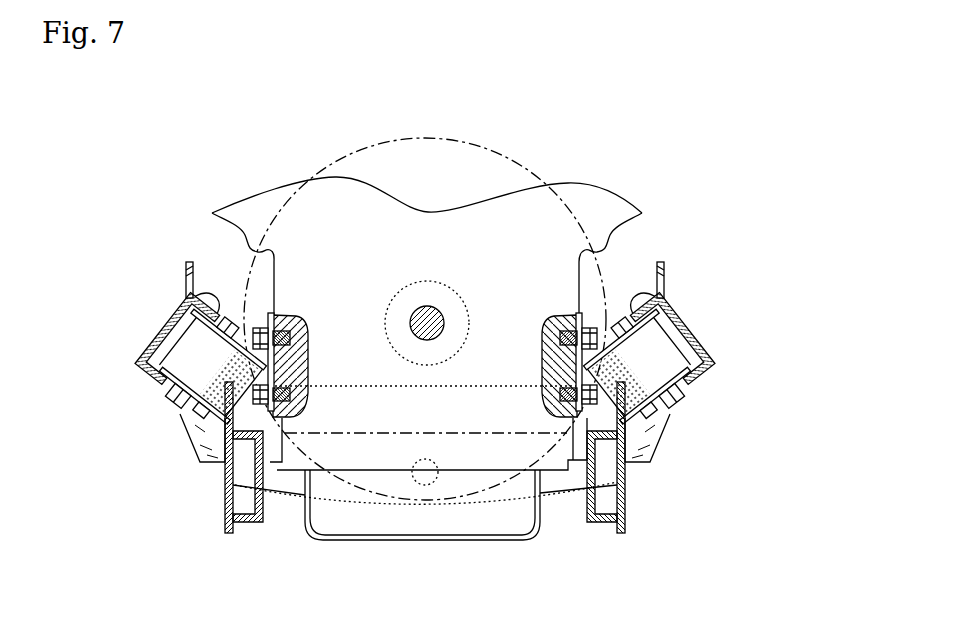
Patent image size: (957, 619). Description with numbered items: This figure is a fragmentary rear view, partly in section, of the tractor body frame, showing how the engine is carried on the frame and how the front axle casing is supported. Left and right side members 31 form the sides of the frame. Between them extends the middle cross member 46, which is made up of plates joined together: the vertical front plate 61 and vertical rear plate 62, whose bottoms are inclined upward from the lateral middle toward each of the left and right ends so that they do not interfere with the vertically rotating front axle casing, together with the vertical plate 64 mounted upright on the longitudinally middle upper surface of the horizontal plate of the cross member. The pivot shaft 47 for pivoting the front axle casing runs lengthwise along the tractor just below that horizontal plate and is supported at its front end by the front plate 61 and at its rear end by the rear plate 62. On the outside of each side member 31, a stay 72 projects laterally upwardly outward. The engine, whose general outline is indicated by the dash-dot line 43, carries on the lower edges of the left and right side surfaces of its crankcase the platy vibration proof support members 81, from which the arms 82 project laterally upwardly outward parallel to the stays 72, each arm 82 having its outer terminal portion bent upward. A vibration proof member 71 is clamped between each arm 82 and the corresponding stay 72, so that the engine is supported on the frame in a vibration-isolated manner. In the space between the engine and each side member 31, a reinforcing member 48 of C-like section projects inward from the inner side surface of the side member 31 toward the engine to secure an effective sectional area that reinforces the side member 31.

The side member 31 is at (228, 490).
The engine 43 is at (483, 143).
The middle cross member 46 is at (554, 514).
The pivot shaft 47 is at (415, 485).
The reinforcing member 48 is at (260, 520).
The front plate 61 is at (530, 468).
The rear plate 62 is at (593, 460).
The vertical plate 64 is at (473, 385).
The vibration proof member 71 is at (197, 353).
The stay 72 is at (205, 432).
The vibration proof support member 81 is at (583, 308).
The arm 82 is at (669, 268).